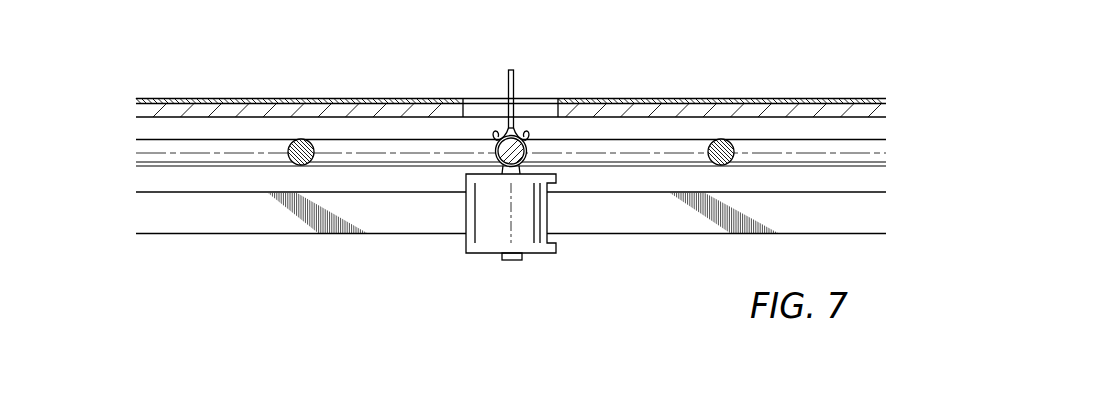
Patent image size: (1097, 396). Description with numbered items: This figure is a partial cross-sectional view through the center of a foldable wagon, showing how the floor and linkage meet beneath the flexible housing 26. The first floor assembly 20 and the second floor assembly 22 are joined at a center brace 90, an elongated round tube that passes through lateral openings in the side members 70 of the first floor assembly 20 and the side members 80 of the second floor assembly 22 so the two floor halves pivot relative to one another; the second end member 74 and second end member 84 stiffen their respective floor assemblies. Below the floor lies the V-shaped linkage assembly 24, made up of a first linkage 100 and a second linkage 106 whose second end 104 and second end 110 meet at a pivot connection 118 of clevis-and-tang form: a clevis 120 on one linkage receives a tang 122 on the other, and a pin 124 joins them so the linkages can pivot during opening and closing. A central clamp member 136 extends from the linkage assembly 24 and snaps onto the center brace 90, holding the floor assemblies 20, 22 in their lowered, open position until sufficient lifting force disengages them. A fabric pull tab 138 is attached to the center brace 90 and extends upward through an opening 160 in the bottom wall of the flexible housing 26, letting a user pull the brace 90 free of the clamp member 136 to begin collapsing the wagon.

The first floor assembly 20 is at (895, 128).
The second floor assembly 22 is at (198, 245).
The linkage assembly 24 is at (323, 230).
The flexible housing 26 is at (677, 98).
The side members 70 is at (645, 155).
The second end member 74 is at (722, 165).
The side members 80 is at (245, 145).
The second end member 84 is at (315, 160).
The center brace 90 is at (522, 148).
The first linkage 100 is at (855, 222).
The second end 104 is at (605, 220).
The second linkage 106 is at (225, 225).
The second end 110 is at (430, 223).
The pivot connection 118 is at (530, 265).
The clevis 120 is at (538, 252).
The tang 122 is at (498, 227).
The pin 124 is at (518, 257).
The central clamp member 136 is at (495, 153).
The tab 138 is at (514, 79).
The opening 160 is at (485, 99).